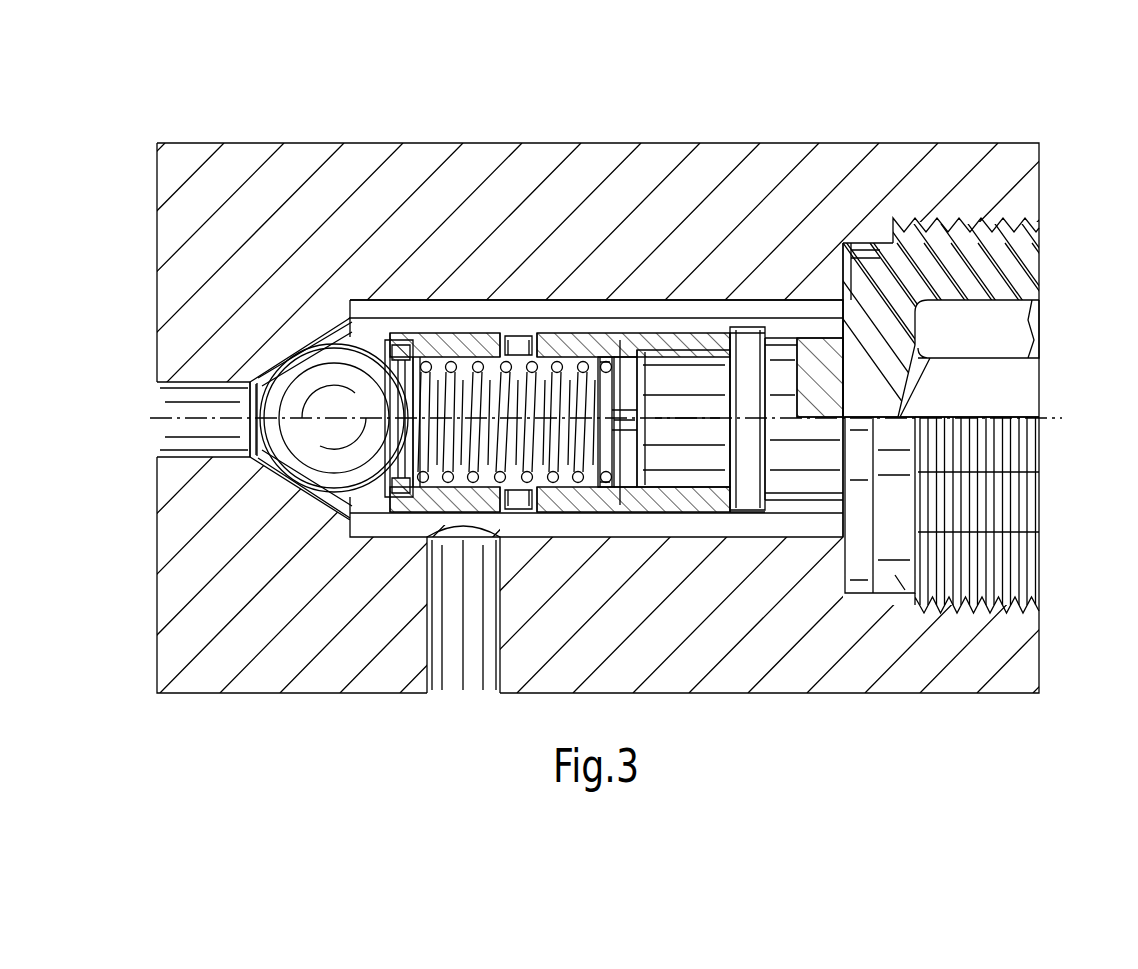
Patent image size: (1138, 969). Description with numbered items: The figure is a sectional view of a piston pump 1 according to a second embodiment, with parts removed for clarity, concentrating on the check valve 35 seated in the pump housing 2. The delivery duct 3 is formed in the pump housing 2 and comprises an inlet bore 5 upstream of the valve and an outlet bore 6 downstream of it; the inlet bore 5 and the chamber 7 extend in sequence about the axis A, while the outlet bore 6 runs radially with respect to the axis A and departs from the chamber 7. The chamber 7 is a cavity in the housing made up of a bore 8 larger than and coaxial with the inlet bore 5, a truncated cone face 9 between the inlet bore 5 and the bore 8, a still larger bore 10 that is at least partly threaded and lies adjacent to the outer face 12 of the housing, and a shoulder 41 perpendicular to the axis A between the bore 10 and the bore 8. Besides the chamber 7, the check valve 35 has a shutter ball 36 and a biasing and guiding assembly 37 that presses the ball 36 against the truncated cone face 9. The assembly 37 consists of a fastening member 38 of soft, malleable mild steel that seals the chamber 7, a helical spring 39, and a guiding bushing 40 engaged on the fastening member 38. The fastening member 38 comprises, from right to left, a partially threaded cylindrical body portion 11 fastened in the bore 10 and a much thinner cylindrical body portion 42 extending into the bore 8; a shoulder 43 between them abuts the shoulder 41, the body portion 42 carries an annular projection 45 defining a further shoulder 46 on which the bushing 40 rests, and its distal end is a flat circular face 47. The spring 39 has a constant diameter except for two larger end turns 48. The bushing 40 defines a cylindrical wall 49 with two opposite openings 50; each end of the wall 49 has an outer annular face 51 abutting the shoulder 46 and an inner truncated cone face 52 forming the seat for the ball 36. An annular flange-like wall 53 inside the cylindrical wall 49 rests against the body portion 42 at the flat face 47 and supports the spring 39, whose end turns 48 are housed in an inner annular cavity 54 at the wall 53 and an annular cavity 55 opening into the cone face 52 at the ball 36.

The pump 1 is at (898, 132).
The pump housing 2 is at (648, 285).
The delivery duct 3 is at (230, 462).
The inlet bore 5 is at (215, 383).
The outlet bore 6 is at (475, 697).
The chamber 7 is at (617, 310).
The bore 8 is at (578, 330).
The truncated cone face 9 is at (383, 300).
The bore 10 is at (905, 236).
The partially threaded cylindrical body portion 11 is at (897, 575).
The outer face 12 is at (1039, 191).
The check valve 35 is at (642, 325).
The shutter ball 36 is at (295, 400).
The biasing and guiding assembly 37 is at (778, 508).
The fastening member 38 is at (1044, 525).
The helical spring 39 is at (556, 335).
The guiding bushing 40 is at (497, 330).
The shoulder 41 is at (843, 298).
The cylindrical body portion 42 is at (698, 489).
The shoulder 43 is at (840, 287).
The annular projection 45 is at (740, 512).
The shoulder 46 is at (715, 345).
The flat circular face 47 is at (652, 495).
The end turns 48 is at (600, 490).
The cylindrical wall 49 is at (428, 340).
The openings 50 is at (520, 338).
The outer annular face 51 is at (300, 378).
The inner truncated cone face 52 is at (338, 513).
The annular flange-like wall 53 is at (690, 335).
The inner annular cavity 54 is at (572, 500).
The annular cavity 55 is at (405, 335).
The axis A is at (1050, 413).